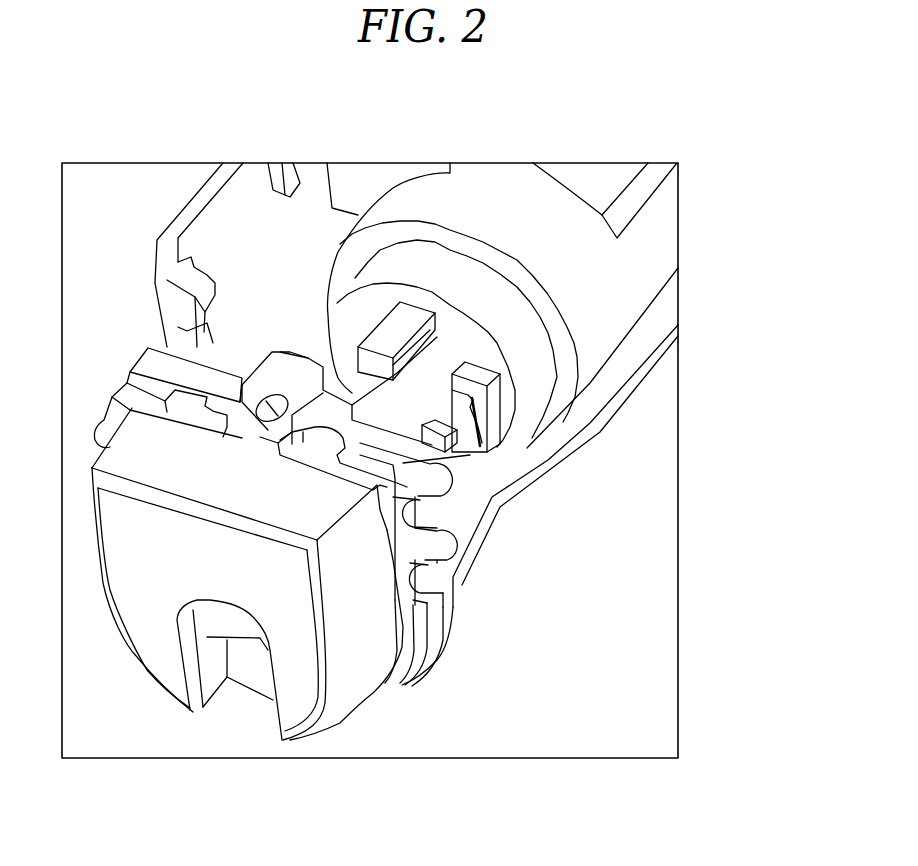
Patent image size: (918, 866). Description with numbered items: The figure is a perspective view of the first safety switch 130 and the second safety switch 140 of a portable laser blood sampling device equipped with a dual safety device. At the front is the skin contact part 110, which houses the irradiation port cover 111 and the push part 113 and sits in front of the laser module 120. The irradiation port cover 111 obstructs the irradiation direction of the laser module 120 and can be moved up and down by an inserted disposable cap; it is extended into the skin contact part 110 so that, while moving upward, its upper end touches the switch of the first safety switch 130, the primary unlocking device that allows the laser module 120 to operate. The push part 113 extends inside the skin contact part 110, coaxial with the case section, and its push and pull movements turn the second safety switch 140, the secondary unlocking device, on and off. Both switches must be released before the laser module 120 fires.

The skin contact part 110 is at (302, 700).
The irradiation port cover 111 is at (368, 393).
The push part 113 is at (470, 450).
The laser module 120 is at (632, 298).
The first safety switch 130 is at (407, 327).
The second safety switch 140 is at (493, 407).